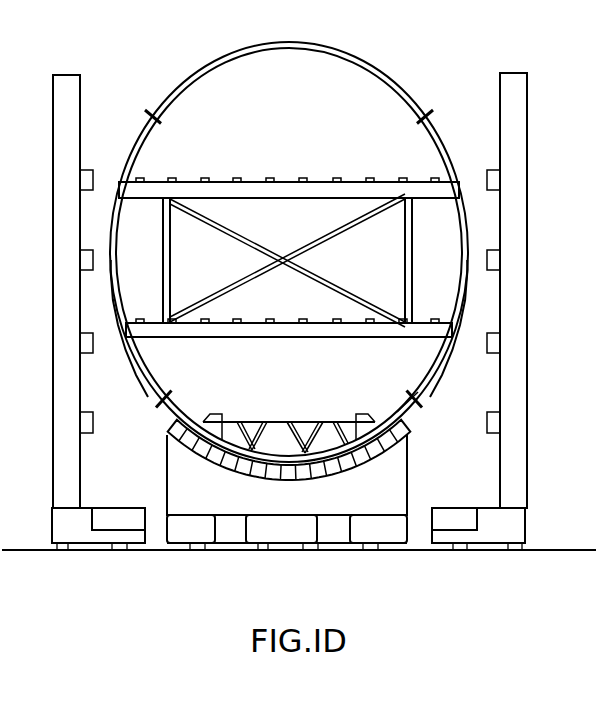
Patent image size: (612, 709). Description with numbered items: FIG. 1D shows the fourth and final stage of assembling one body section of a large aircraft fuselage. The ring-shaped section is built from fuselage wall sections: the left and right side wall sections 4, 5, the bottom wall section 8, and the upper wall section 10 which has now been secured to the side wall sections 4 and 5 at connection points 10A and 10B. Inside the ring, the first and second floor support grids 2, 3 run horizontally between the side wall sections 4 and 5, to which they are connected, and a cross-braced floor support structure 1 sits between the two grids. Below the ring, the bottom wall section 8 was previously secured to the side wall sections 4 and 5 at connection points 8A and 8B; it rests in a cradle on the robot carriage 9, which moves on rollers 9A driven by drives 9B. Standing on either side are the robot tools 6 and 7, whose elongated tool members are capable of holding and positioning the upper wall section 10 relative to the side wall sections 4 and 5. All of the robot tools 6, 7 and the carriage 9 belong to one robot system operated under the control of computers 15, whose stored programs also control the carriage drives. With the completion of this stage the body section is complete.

The floor support structure 1 is at (383, 248).
The first floor support grid 2 is at (281, 191).
The second floor support grid 3 is at (318, 331).
The side wall section 4 is at (138, 368).
The side wall section 5 is at (462, 292).
The robot tool 6 is at (68, 90).
The robot tool 7 is at (515, 120).
The bottom wall section 8 is at (395, 388).
The connection point 8A is at (162, 398).
The connection point 8B is at (393, 382).
The robot carriage 9 is at (398, 482).
The rollers 9A is at (313, 542).
The drives 9B is at (193, 528).
The upper wall section 10 is at (368, 49).
The connection point 10A is at (154, 119).
The connection point 10B is at (422, 128).
The computers 15 is at (108, 518).